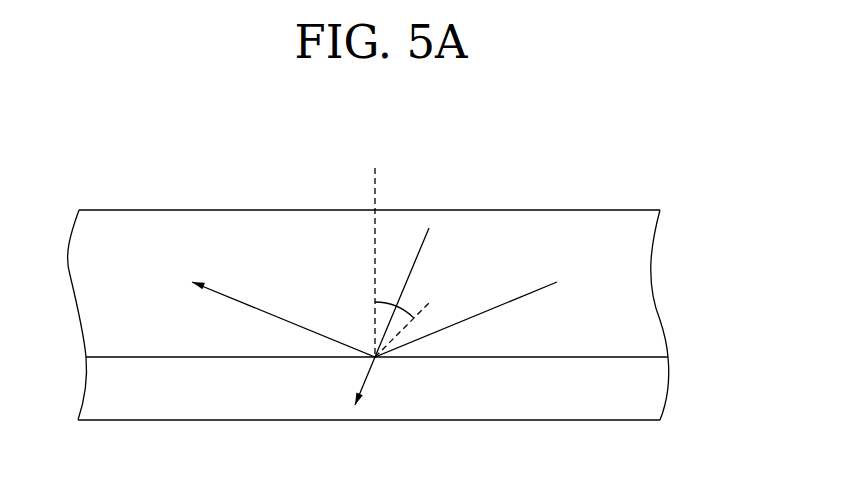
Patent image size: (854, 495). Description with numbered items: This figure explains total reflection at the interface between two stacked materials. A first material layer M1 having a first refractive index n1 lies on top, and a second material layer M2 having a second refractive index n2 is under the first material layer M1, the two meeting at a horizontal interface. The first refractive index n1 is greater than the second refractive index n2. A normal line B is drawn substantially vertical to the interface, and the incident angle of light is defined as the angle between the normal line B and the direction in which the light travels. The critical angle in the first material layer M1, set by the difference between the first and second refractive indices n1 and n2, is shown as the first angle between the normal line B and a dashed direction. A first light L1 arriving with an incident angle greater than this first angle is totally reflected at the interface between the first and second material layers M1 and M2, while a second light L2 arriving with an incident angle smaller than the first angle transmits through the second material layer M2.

The normal line B is at (374, 249).
The first light L1 is at (543, 287).
The second light L2 is at (427, 237).
The first material layer M1 is at (635, 267).
The second material layer M2 is at (652, 382).
The first refractive index n1 is at (630, 303).
The second refractive index n2 is at (646, 398).